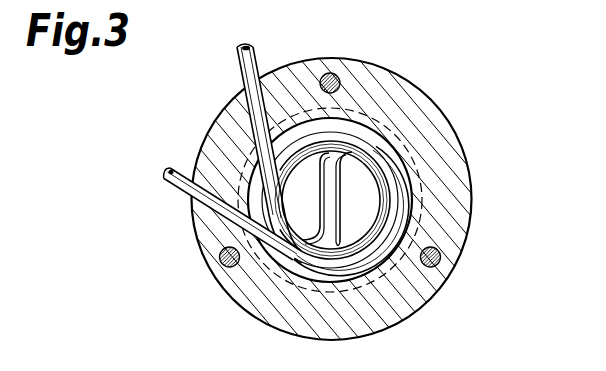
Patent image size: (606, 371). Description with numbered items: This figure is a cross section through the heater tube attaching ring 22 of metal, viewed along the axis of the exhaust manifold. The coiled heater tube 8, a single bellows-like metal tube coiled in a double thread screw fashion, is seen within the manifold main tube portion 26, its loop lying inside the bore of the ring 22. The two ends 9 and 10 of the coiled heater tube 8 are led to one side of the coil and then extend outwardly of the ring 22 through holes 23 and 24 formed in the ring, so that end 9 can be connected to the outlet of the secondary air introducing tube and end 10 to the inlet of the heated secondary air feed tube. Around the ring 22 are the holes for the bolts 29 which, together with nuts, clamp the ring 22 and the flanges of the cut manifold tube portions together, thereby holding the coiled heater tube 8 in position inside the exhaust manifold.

The coiled heater tube 8 is at (398, 150).
The end of coiled heater tube 9 is at (181, 189).
The end of coiled heater tube 10 is at (241, 73).
The heater tube attaching ring 22 is at (318, 186).
The hole 23 is at (206, 208).
The hole 24 is at (266, 72).
The manifold main tube portion 26 is at (421, 222).
The bolts 29 is at (337, 74).